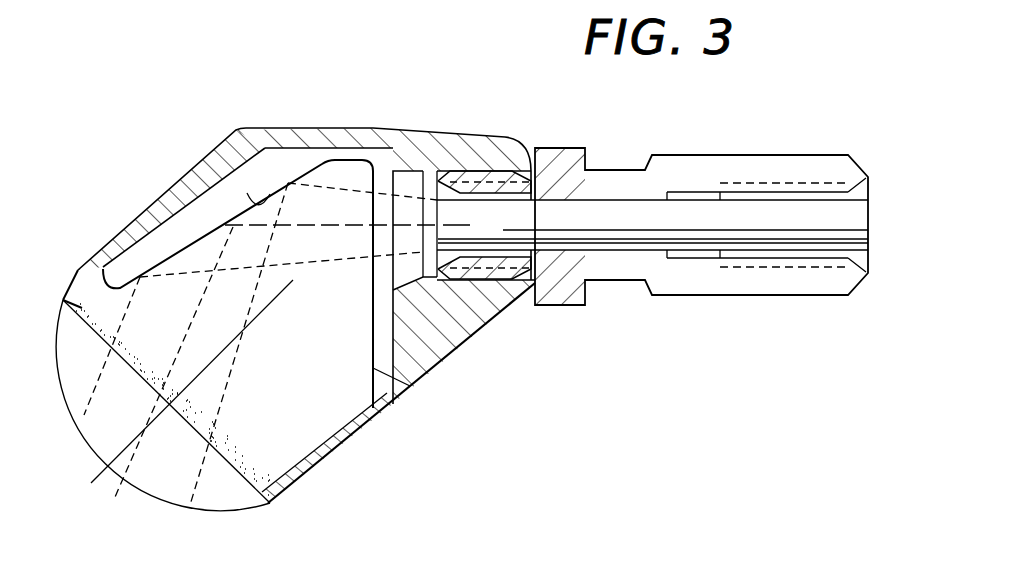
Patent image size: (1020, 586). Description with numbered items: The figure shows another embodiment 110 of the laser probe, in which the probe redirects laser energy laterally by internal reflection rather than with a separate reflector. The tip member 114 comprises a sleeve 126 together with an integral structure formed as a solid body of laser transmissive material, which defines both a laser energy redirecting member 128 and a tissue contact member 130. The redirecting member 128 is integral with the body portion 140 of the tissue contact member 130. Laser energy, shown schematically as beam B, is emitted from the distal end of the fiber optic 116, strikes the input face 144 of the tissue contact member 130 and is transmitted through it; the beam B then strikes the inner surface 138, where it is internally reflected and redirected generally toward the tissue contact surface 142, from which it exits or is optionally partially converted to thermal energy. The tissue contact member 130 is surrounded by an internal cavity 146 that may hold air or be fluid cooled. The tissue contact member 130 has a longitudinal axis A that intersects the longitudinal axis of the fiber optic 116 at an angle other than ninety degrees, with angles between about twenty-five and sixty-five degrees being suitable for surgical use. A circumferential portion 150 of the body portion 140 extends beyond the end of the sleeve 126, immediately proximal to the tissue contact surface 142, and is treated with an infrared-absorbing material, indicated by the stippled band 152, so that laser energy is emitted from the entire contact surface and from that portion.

The embodiment 110 is at (562, 372).
The tip member 114 is at (351, 106).
The fiber optic 116 is at (603, 217).
The sleeve 126 is at (440, 343).
The laser energy redirecting member 128 is at (247, 178).
The tissue contact member 130 is at (203, 531).
The inner surface 138 is at (258, 196).
The body portion 140 is at (337, 462).
The tissue contact surface 142 is at (135, 468).
The input face 144 is at (407, 383).
The internal cavity 146 is at (210, 148).
The circumferential portion 150 is at (73, 278).
The stippled band 152 is at (82, 308).
The longitudinal axis A is at (92, 486).
The beam B is at (343, 265).